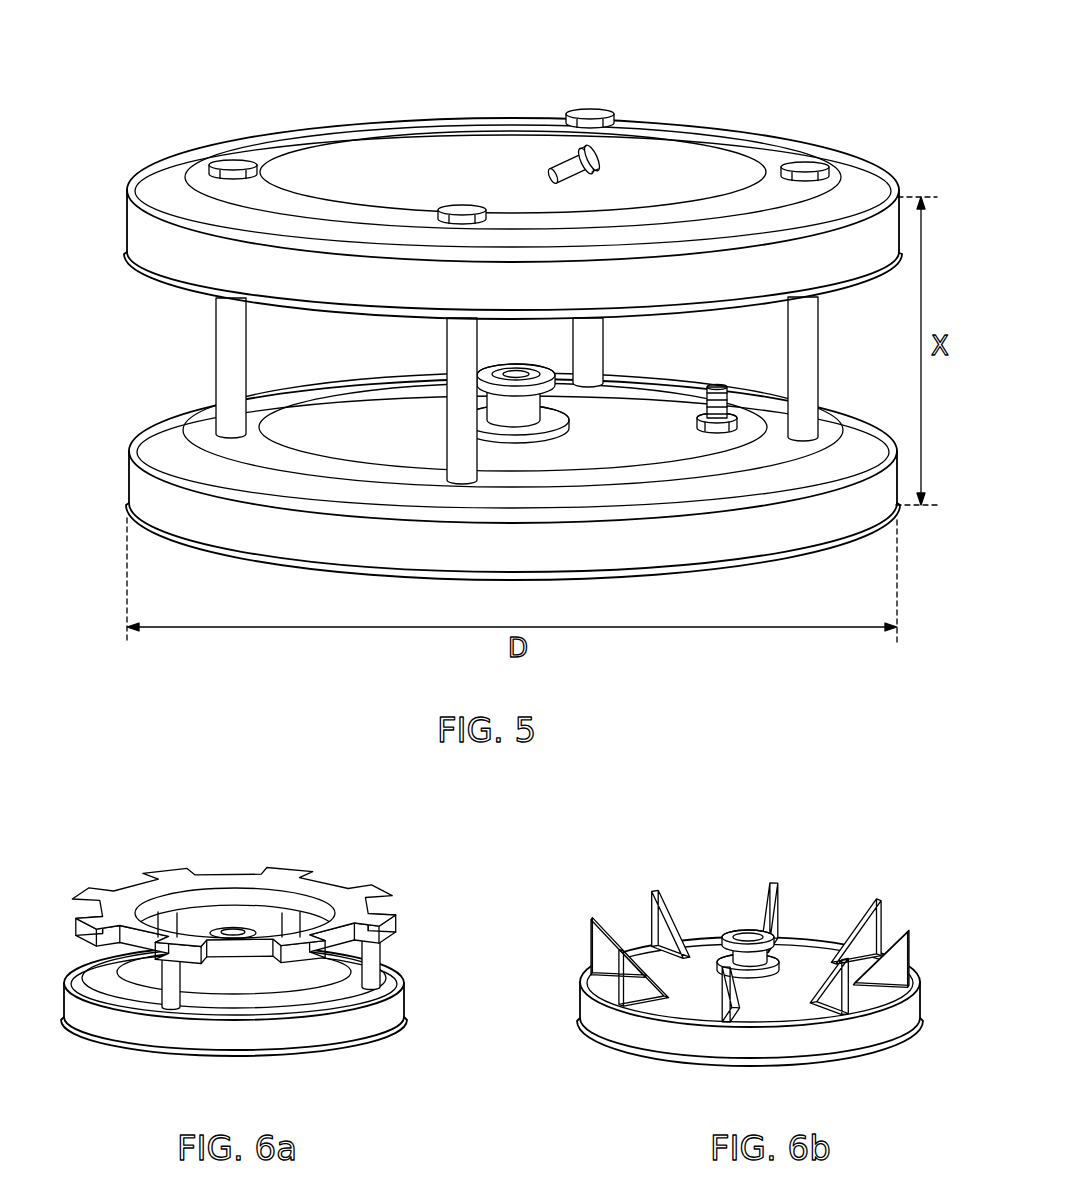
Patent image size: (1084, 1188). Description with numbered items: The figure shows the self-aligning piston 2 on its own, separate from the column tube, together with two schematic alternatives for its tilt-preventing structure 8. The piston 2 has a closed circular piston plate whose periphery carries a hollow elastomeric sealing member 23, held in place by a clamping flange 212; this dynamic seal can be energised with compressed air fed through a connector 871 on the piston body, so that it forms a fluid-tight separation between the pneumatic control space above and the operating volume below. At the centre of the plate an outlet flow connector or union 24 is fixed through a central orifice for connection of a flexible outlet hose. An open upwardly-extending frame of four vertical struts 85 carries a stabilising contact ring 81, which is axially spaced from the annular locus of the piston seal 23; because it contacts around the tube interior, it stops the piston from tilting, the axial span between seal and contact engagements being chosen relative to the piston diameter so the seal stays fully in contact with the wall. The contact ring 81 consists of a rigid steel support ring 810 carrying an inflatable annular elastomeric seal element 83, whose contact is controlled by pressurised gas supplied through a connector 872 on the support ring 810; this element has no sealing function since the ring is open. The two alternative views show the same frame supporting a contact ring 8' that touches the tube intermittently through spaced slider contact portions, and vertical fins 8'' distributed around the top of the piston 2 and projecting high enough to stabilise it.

In FIG. 5, the self-aligning piston 2 is at (483, 529).
In FIG. 6a, the self-aligning piston 2 is at (362, 1047).
In FIG. 6b, the self-aligning piston 2 is at (642, 1055).
In FIG. 5, the tilt-preventing structure 8 is at (475, 262).
In FIG. 6a, the contact ring 8' is at (240, 916).
In FIG. 6b, the vertical fins 8'' is at (750, 936).
In FIG. 5, the contact ring 81 is at (475, 179).
In FIG. 5, the rigid steel support ring 810 is at (198, 167).
In FIG. 5, the inflatable annular elastomeric seal element 83 is at (130, 214).
In FIG. 5, the vertical struts 85 is at (216, 373).
In FIG. 5, the clamping flange 212 is at (170, 434).
In FIG. 5, the peripheral elastomeric sealing member 23 is at (141, 478).
In FIG. 5, the outlet flow connector 24 is at (540, 405).
In FIG. 6b, the outlet flow connector 24 is at (768, 950).
In FIG. 5, the connector 871 is at (730, 410).
In FIG. 5, the connector 872 is at (600, 158).